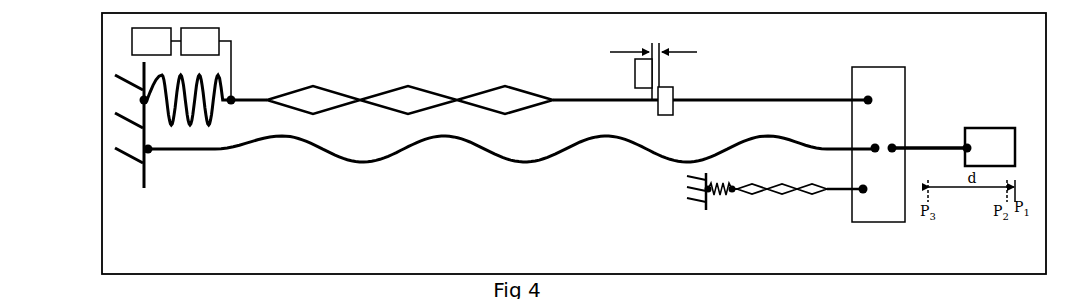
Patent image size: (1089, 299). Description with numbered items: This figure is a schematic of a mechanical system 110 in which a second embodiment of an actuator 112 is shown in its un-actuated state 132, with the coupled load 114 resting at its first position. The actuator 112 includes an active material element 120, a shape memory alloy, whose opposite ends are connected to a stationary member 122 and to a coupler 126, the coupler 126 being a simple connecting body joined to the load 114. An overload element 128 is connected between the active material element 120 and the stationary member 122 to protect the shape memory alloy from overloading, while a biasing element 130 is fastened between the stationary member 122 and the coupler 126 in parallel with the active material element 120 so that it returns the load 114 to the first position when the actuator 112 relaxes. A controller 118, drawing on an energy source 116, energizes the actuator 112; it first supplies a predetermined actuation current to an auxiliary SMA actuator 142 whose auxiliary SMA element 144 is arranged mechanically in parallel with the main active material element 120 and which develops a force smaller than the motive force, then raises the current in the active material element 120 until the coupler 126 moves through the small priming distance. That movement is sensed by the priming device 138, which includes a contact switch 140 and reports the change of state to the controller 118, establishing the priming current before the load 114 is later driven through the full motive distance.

The mechanical system 110 is at (100, 67).
The actuator 112 is at (549, 69).
The load 114 is at (953, 147).
The energy source 116 is at (151, 41).
The controller 118 is at (201, 64).
The active material element 120 is at (378, 90).
The stationary member 122 is at (147, 173).
The coupler 126 is at (863, 67).
The overload element 128 is at (210, 115).
The biasing element 130 is at (387, 153).
The un-actuated state 132 is at (123, 131).
The priming device 138 is at (628, 77).
The contact switch 140 is at (673, 88).
The auxiliary SMA actuator 142 is at (732, 209).
The auxiliary SMA element 144 is at (745, 190).